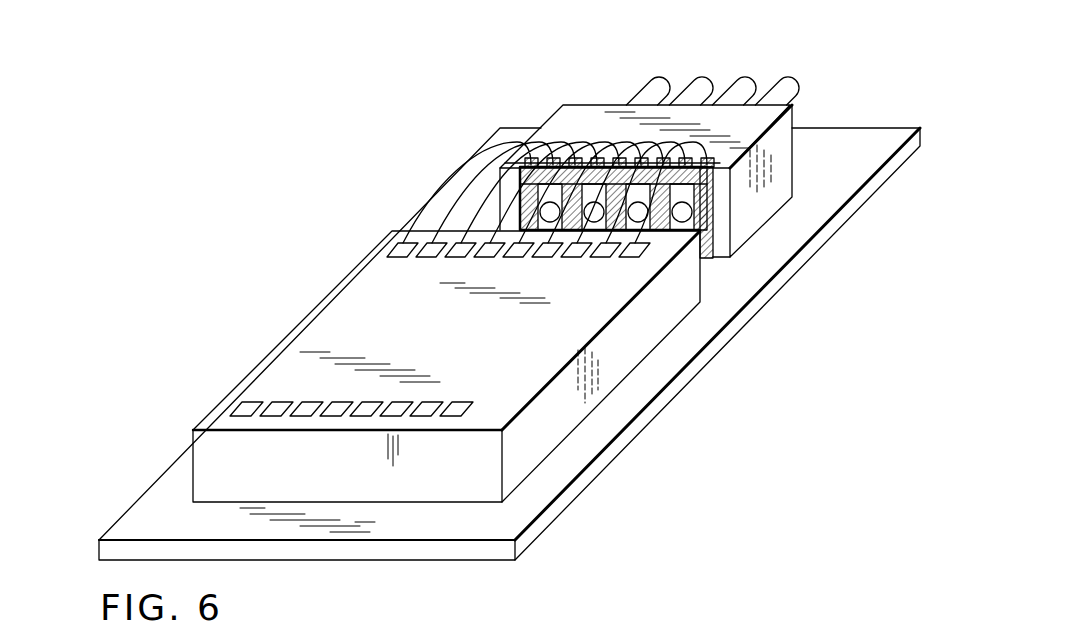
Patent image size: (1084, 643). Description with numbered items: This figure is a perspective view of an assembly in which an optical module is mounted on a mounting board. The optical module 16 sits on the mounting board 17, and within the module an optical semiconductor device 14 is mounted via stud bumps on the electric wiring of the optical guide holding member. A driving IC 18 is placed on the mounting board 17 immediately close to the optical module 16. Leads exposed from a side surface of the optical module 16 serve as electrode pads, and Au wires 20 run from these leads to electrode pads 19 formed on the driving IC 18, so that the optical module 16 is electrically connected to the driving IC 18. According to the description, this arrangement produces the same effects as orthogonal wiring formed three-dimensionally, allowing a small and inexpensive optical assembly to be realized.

The optical semiconductor device 14 is at (714, 214).
The optical module 16 is at (594, 118).
The mounting board 17 is at (758, 271).
The driving IC 18 is at (603, 362).
The electrode pads 19 is at (400, 248).
The Au wires 20 is at (473, 170).